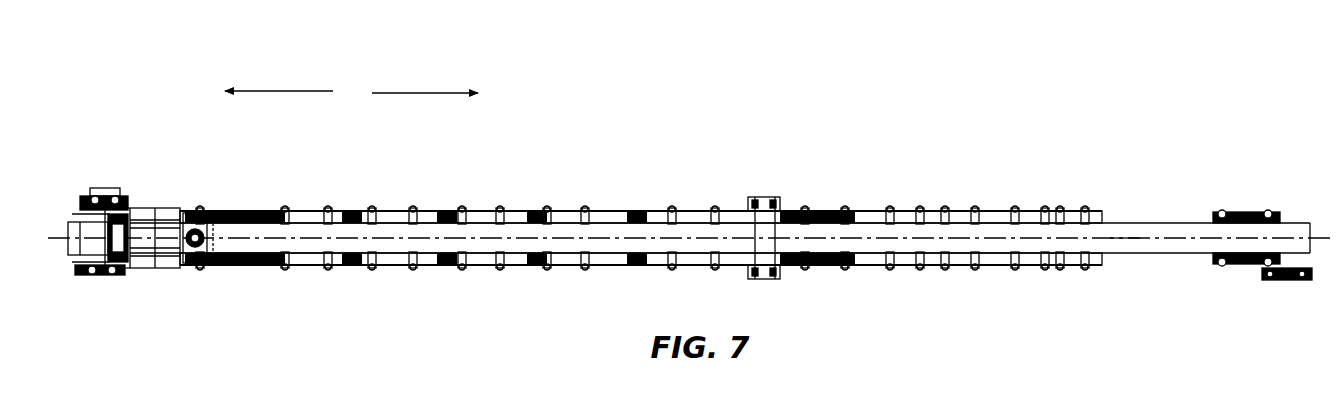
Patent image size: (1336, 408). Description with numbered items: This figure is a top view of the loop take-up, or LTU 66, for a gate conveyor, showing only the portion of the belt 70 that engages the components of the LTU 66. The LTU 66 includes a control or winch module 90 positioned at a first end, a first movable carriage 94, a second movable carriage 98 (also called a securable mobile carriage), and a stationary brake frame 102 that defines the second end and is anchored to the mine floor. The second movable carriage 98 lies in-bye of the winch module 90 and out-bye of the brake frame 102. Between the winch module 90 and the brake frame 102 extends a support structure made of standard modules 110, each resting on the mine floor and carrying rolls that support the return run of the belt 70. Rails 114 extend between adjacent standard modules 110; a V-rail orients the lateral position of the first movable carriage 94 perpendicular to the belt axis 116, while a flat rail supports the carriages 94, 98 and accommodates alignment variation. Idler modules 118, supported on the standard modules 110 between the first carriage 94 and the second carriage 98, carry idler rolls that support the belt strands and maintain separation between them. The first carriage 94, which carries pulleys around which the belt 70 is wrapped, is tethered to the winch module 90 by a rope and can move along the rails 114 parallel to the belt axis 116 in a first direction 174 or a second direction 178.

The loop take-up 66 is at (660, 135).
The belt 70 is at (685, 228).
The winch module 90 is at (147, 175).
The first movable carriage 94 is at (216, 213).
The second movable carriage 98 is at (825, 200).
The brake frame 102 is at (1249, 210).
The standard modules 110 is at (395, 270).
The rails 114 is at (948, 263).
The belt axis 116 is at (1125, 238).
The idler modules 118 is at (537, 208).
The first direction 174 is at (282, 91).
The second direction 178 is at (398, 93).